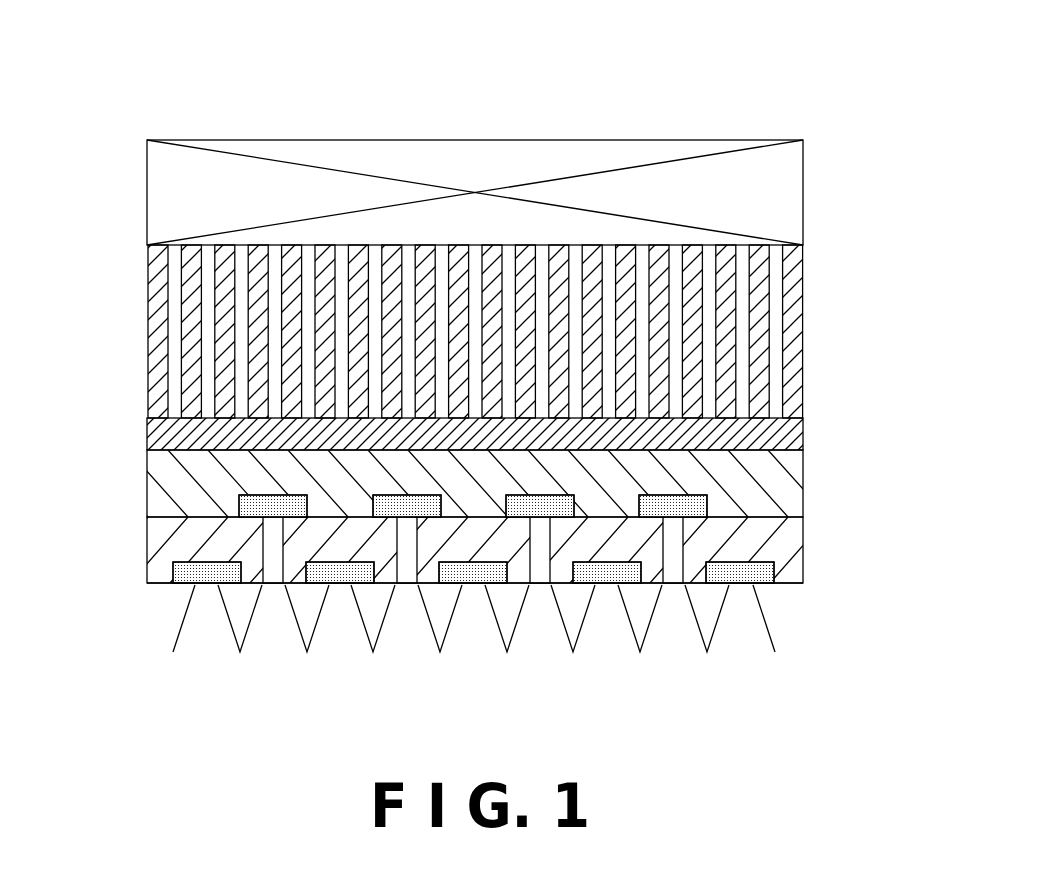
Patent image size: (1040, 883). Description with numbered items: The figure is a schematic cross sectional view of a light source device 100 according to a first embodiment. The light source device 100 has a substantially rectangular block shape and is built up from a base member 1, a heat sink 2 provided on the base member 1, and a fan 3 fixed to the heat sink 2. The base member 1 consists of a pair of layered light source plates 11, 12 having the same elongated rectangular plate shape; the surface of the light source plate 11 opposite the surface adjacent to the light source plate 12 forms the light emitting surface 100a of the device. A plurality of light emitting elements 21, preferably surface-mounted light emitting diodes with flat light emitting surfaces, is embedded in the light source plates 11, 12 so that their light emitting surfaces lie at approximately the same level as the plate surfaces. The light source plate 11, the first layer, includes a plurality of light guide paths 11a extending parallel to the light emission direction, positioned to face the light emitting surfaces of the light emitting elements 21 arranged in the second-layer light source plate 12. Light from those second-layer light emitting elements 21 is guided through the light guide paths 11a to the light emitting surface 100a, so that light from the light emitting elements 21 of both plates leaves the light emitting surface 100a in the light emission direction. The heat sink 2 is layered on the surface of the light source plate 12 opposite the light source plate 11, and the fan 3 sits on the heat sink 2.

The light source device 100 is at (488, 333).
The light emitting surface 100a is at (150, 586).
The base member 1 is at (488, 537).
The light source plate 11 is at (803, 549).
The light guide path 11a is at (272, 543).
The light source plate 12 is at (803, 481).
The heat sink 2 is at (803, 321).
The light emitting element 21 is at (699, 496).
The fan 3 is at (803, 187).